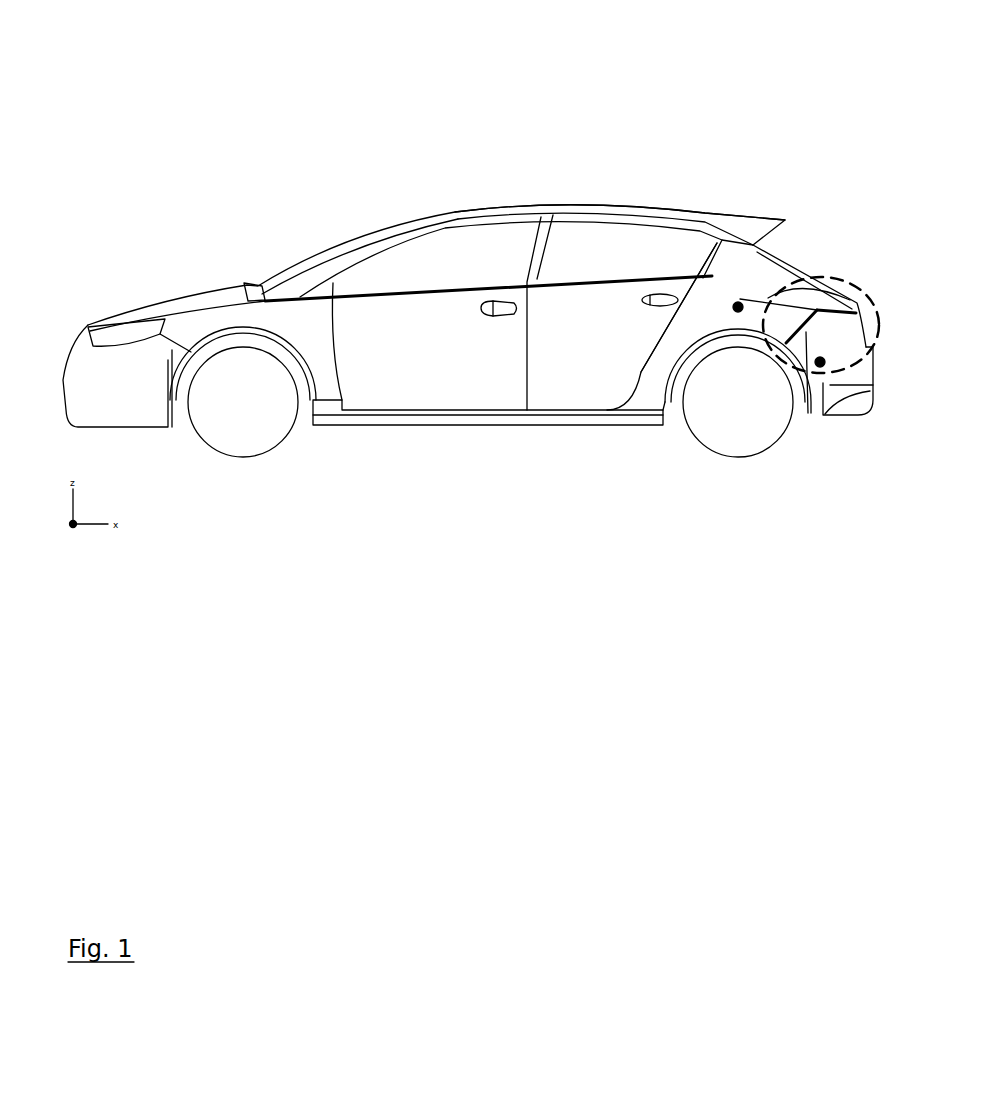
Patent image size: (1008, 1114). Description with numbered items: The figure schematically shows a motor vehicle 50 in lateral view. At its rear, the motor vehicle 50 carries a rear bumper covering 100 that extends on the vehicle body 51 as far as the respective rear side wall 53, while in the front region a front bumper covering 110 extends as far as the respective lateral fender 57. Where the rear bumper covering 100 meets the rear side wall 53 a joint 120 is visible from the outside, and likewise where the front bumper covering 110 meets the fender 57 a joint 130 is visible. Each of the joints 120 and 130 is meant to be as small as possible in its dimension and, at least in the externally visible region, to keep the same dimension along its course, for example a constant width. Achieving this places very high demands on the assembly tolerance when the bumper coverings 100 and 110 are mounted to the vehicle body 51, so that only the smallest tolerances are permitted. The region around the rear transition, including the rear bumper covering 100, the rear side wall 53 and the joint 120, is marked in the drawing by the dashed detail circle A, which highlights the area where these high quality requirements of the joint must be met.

The motor vehicle 50 is at (628, 172).
The vehicle body 51 is at (733, 220).
The rear side wall 53 is at (738, 307).
The fender 57 is at (208, 328).
The rear bumper covering 100 is at (820, 362).
The front bumper covering 110 is at (115, 383).
The joint 120 is at (812, 400).
The joint 130 is at (168, 345).
The detail region A is at (838, 277).